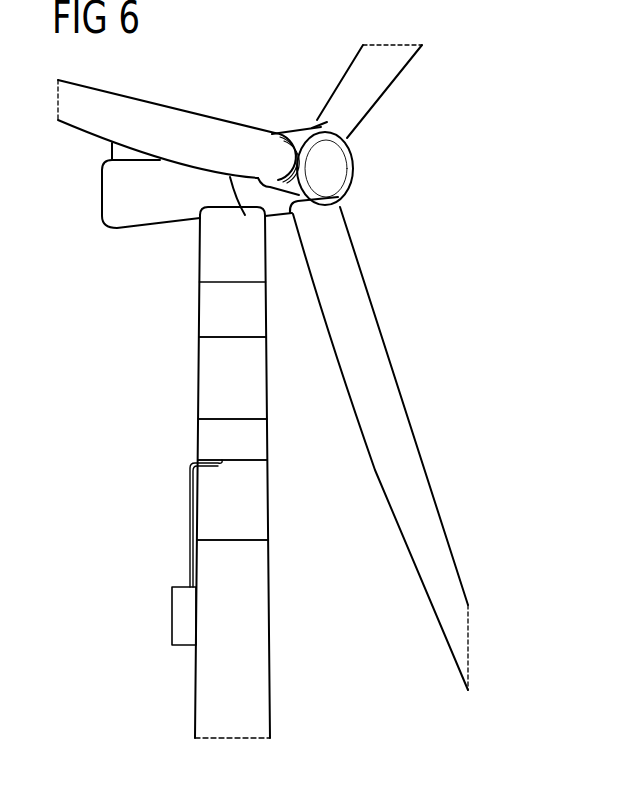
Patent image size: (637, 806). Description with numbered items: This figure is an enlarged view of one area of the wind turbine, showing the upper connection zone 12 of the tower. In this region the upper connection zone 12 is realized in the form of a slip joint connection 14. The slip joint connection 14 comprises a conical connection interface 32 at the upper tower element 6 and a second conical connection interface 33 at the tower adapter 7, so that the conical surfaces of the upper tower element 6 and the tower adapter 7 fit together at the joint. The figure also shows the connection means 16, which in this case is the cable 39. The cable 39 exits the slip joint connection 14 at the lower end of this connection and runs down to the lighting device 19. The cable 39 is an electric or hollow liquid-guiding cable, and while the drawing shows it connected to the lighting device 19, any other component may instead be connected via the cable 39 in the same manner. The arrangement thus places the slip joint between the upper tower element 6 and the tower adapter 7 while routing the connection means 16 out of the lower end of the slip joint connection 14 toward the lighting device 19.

The upper tower element 6 is at (207, 693).
The tower adapter 7 is at (213, 308).
The second conical connection interface 33 is at (213, 383).
The slip joint connection 14 is at (284, 447).
The conical connection interface 32 is at (248, 502).
The connection means 16 is at (142, 546).
The upper connection zone 12 is at (303, 432).
The cable 39 is at (187, 502).
The lighting device 19 is at (180, 615).